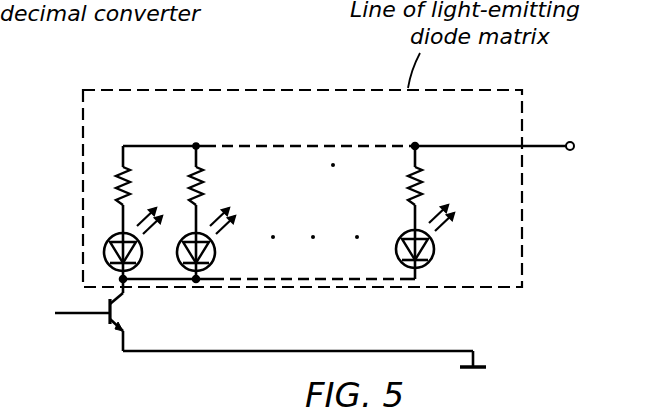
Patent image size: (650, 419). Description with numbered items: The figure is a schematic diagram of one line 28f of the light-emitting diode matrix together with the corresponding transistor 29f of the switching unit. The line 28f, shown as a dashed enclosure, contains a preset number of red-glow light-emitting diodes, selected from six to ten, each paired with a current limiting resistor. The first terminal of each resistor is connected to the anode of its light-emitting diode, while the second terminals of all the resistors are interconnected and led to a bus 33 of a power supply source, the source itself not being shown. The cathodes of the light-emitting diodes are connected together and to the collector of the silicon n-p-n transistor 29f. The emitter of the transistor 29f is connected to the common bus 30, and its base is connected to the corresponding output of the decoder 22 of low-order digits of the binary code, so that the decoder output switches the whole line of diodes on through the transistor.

The decoder of lower-order binary digits 22 is at (61, 320).
The fth line of the light-emitting diode matrix 28f is at (451, 89).
The transistor 29f is at (124, 312).
The common bus 30 is at (470, 346).
The bus of a power supply source 33 is at (572, 141).